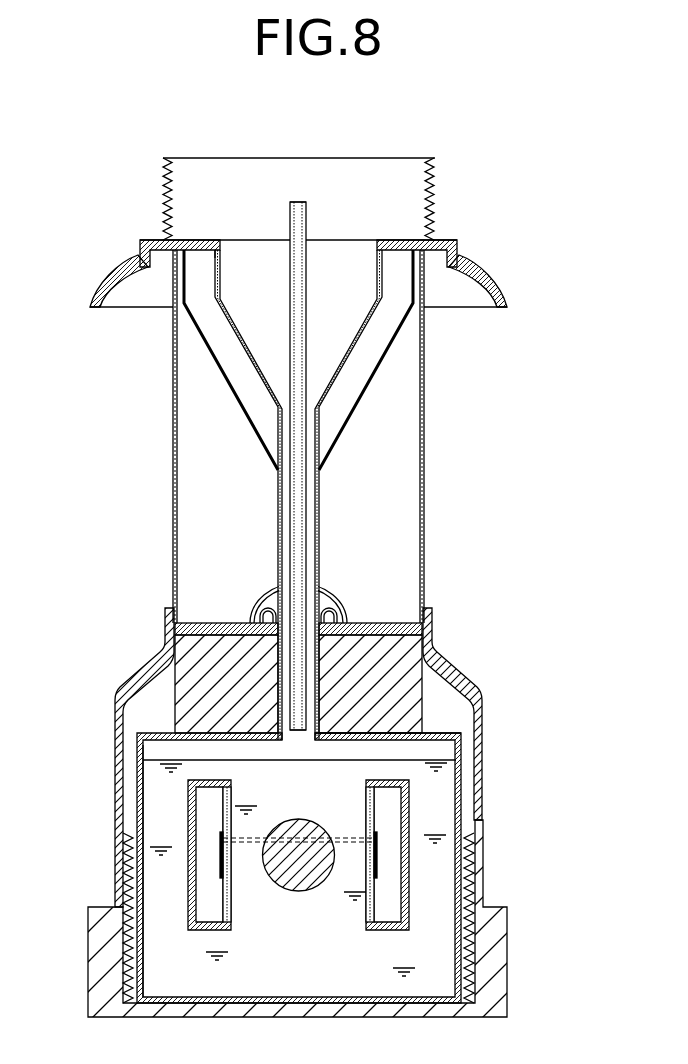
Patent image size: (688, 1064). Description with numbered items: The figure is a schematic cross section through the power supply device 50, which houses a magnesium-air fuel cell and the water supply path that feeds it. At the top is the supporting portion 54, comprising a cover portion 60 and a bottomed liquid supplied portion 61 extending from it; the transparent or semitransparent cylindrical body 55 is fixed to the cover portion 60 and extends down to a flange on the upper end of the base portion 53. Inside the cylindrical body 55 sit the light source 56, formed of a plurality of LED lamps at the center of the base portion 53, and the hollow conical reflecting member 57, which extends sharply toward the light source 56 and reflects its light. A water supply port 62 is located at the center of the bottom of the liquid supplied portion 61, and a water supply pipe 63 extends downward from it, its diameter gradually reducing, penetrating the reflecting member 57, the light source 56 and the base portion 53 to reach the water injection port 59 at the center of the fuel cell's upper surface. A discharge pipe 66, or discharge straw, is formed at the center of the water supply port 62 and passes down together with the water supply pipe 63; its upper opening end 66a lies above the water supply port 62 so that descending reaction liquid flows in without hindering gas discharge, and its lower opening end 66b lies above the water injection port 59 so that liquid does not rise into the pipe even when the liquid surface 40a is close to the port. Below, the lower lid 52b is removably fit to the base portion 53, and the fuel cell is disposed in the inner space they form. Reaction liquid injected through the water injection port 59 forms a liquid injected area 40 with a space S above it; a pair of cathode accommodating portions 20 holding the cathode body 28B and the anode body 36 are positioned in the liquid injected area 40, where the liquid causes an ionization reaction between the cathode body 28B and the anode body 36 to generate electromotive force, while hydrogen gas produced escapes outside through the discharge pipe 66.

The power supply device 50 is at (447, 109).
The supporting portion 54 is at (433, 210).
The liquid supplied portion 61 is at (433, 190).
The cover portion 60 is at (501, 289).
The cylindrical body 55 is at (425, 465).
The light source 56 is at (336, 594).
The water supply port 62 is at (218, 247).
The water supply pipe 63 is at (352, 345).
The reflecting member 57 is at (363, 398).
The base portion 53 is at (222, 703).
The discharge pipe 66 is at (308, 222).
The upper opening end 66a is at (298, 202).
The lower opening end 66b is at (295, 709).
The lower lid 52b is at (494, 954).
The liquid injected area 40 is at (438, 785).
The liquid surface 40a is at (187, 762).
The water injection port 59 is at (430, 753).
The space S is at (456, 760).
The cathode accommodating portion 20 is at (189, 872).
The anode body 36 is at (299, 833).
The cathode body 28B is at (220, 840).